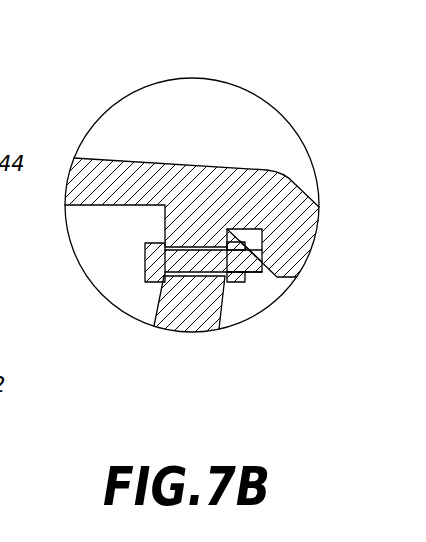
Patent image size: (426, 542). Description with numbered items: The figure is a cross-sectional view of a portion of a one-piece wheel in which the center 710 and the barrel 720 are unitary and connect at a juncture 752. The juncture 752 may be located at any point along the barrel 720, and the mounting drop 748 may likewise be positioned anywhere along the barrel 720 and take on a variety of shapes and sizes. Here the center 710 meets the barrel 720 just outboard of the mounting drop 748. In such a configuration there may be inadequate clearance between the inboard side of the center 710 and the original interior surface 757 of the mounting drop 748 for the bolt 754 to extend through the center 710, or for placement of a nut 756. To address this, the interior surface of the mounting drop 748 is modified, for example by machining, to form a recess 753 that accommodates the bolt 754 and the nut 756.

The center 710 is at (190, 298).
The barrel 720 is at (145, 183).
The mounting drop 748 is at (296, 233).
The juncture 752 is at (203, 193).
The recess 753 is at (248, 227).
The bolt 754 is at (153, 260).
The nut 756 is at (235, 283).
The original interior surface 757 is at (255, 258).